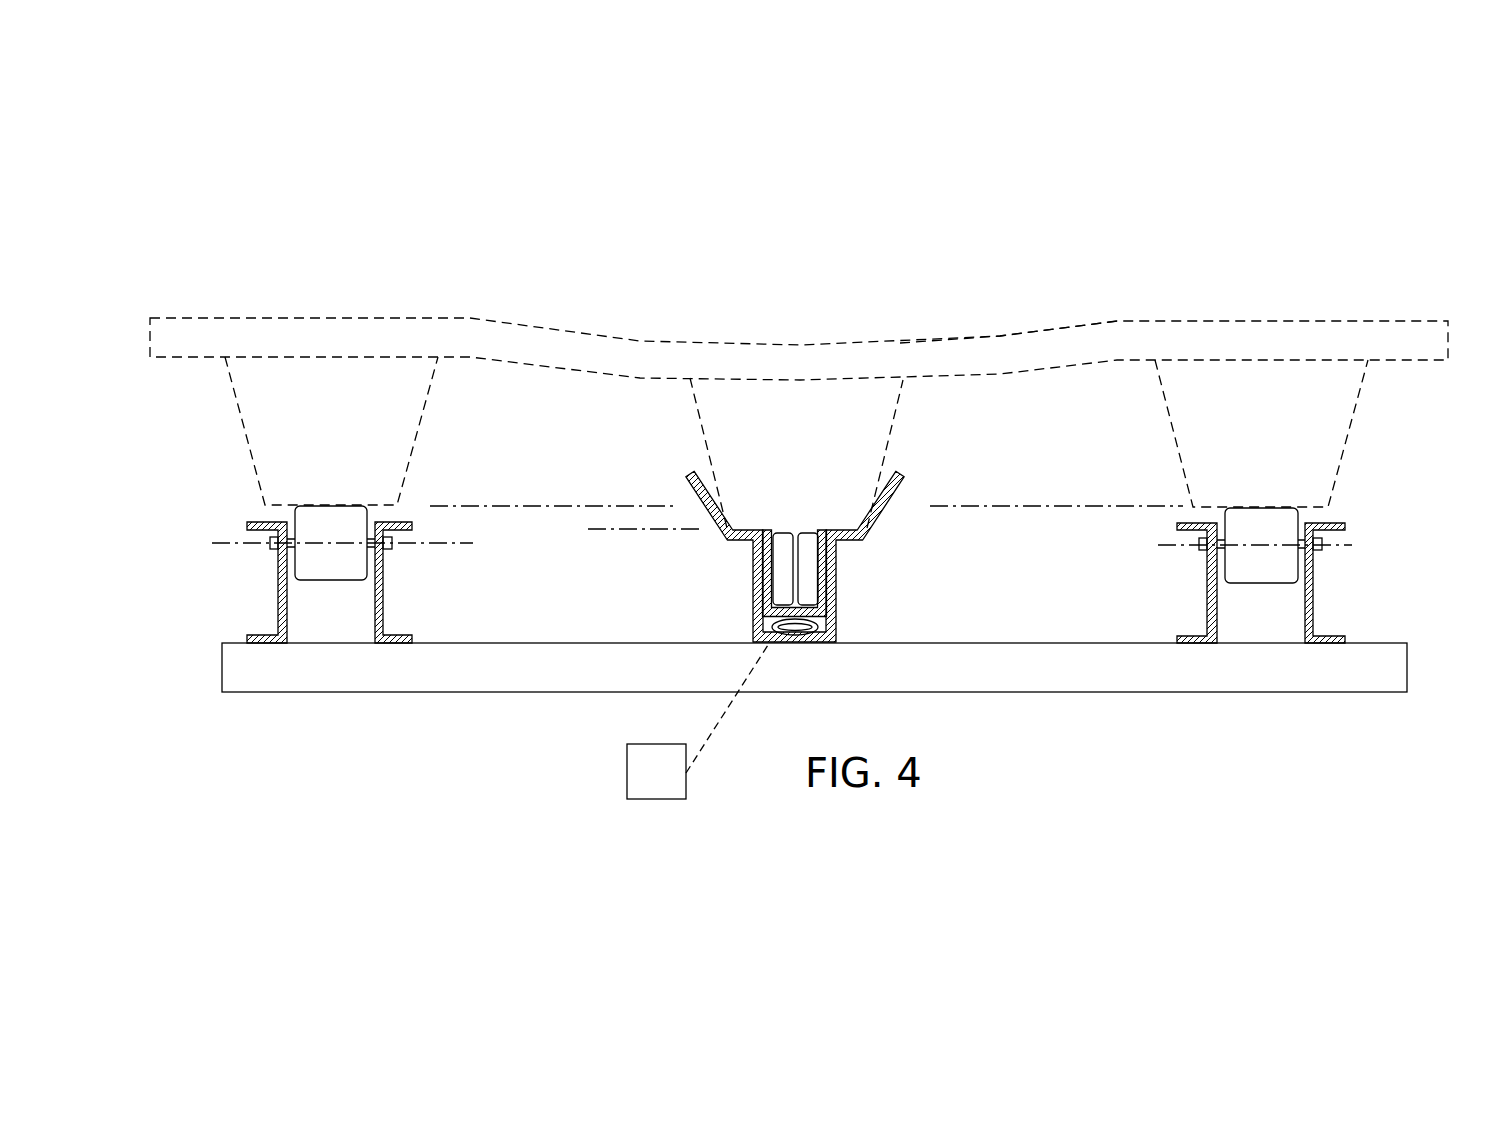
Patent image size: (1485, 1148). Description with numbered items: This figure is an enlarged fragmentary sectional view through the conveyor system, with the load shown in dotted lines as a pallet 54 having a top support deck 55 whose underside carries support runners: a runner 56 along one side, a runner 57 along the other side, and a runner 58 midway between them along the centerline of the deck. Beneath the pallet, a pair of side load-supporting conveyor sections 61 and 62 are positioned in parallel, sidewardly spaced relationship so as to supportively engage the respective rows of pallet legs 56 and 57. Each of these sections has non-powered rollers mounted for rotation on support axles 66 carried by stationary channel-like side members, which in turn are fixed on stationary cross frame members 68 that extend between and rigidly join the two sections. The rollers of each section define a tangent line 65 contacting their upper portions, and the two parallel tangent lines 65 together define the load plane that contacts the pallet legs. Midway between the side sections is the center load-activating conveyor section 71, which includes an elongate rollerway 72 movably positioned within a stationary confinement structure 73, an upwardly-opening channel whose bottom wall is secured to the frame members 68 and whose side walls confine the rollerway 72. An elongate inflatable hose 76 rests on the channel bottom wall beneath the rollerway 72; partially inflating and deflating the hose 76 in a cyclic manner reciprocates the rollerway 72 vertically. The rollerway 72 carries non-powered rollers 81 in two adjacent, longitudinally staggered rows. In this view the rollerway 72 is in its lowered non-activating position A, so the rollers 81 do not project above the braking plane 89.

The pallet 54 is at (535, 324).
The top support deck 55 is at (990, 345).
The runner 56 is at (1325, 455).
The runner 57 is at (407, 406).
The runner 58 is at (873, 423).
The load-supporting conveyor section 61 is at (1269, 601).
The load-supporting conveyor section 62 is at (371, 596).
The tangent line 65 is at (466, 505).
The support axle 66 is at (394, 546).
The frame member 68 is at (452, 670).
The load-activating conveyor section 71 is at (859, 651).
The rollerway 72 is at (760, 586).
The confinement structure 73 is at (838, 620).
The inflatable hose 76 is at (800, 642).
The roller 81 is at (782, 540).
The braking plane 89 is at (672, 534).